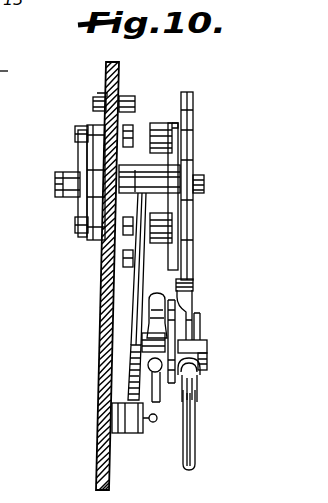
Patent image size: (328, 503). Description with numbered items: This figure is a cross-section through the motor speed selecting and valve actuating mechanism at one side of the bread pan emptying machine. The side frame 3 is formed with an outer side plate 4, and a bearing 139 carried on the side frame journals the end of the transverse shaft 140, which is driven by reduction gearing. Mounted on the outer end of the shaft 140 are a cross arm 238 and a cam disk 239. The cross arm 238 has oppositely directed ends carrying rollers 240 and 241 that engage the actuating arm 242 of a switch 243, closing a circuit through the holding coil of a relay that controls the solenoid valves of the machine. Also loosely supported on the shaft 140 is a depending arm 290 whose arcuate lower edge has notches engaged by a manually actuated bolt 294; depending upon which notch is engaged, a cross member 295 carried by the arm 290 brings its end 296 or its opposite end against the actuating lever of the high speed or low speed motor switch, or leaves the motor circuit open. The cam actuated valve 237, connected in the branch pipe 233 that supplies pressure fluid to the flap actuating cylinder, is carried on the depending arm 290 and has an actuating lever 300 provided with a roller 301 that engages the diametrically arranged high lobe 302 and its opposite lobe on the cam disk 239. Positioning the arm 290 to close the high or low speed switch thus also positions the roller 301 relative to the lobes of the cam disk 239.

The side frame 3 is at (120, 84).
The outer side plate 4 is at (113, 64).
The bearing 139 is at (80, 204).
The shaft 140 is at (66, 180).
The branch pipe 233 is at (190, 437).
The cam actuated valve 237 is at (191, 347).
The cross arm 238 is at (182, 152).
The cam disk 239 is at (194, 100).
The roller 240 is at (194, 128).
The roller 241 is at (186, 223).
The actuating arm 242 is at (149, 313).
The switch 243 is at (129, 366).
The arm 290 is at (136, 286).
The bolt 294 is at (137, 433).
The cross member 295 is at (200, 383).
The end 296 is at (207, 358).
The actuating lever 300 is at (189, 313).
The roller 301 is at (189, 284).
The high lobe 302 is at (194, 176).